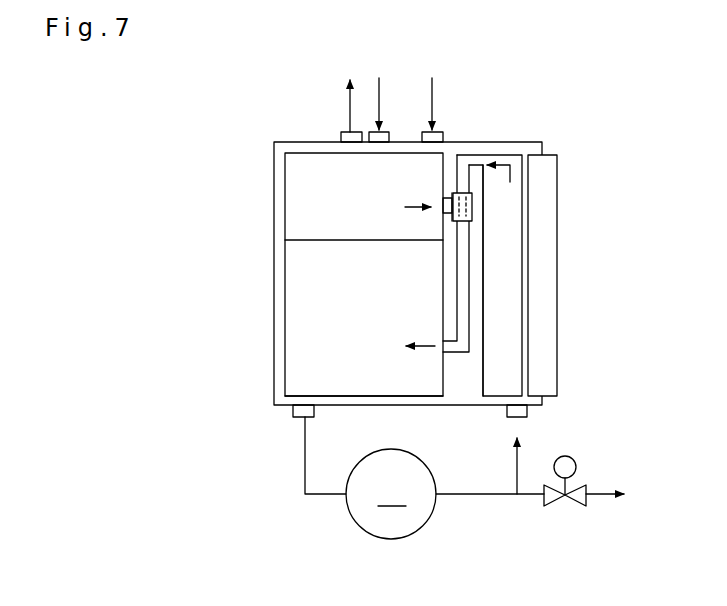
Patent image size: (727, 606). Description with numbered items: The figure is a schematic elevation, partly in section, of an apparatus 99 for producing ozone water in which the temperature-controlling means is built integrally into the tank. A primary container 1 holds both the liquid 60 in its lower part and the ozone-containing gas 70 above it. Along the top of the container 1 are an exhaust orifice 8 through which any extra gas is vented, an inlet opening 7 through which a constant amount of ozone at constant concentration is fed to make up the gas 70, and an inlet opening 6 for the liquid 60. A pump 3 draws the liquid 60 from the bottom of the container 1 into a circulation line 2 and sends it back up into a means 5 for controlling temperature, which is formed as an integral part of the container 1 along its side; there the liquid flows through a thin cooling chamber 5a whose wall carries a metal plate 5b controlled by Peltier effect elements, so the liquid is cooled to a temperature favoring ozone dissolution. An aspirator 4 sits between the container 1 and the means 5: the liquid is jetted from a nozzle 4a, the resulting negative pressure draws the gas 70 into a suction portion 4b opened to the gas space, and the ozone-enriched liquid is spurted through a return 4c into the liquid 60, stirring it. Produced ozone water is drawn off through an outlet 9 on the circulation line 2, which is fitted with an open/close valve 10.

The apparatus 99 is at (271, 137).
The primary container 1 is at (278, 263).
The gas 70 is at (289, 184).
The liquid 60 is at (290, 360).
The exhaust orifice 8 is at (341, 132).
The inlet opening for gas 7 is at (390, 132).
The inlet opening for liquid 6 is at (440, 132).
The means for controlling temperature 5 is at (507, 388).
The cooling chamber 5a is at (517, 264).
The metal plate 5b is at (543, 323).
The aspirator 4 is at (455, 193).
The nozzle 4a is at (445, 214).
The suction portion 4b is at (453, 198).
The return 4c is at (463, 318).
The circulation line 2 is at (318, 495).
The pump 3 is at (391, 494).
The open/close valve 10 is at (556, 500).
The outlet 9 is at (614, 498).